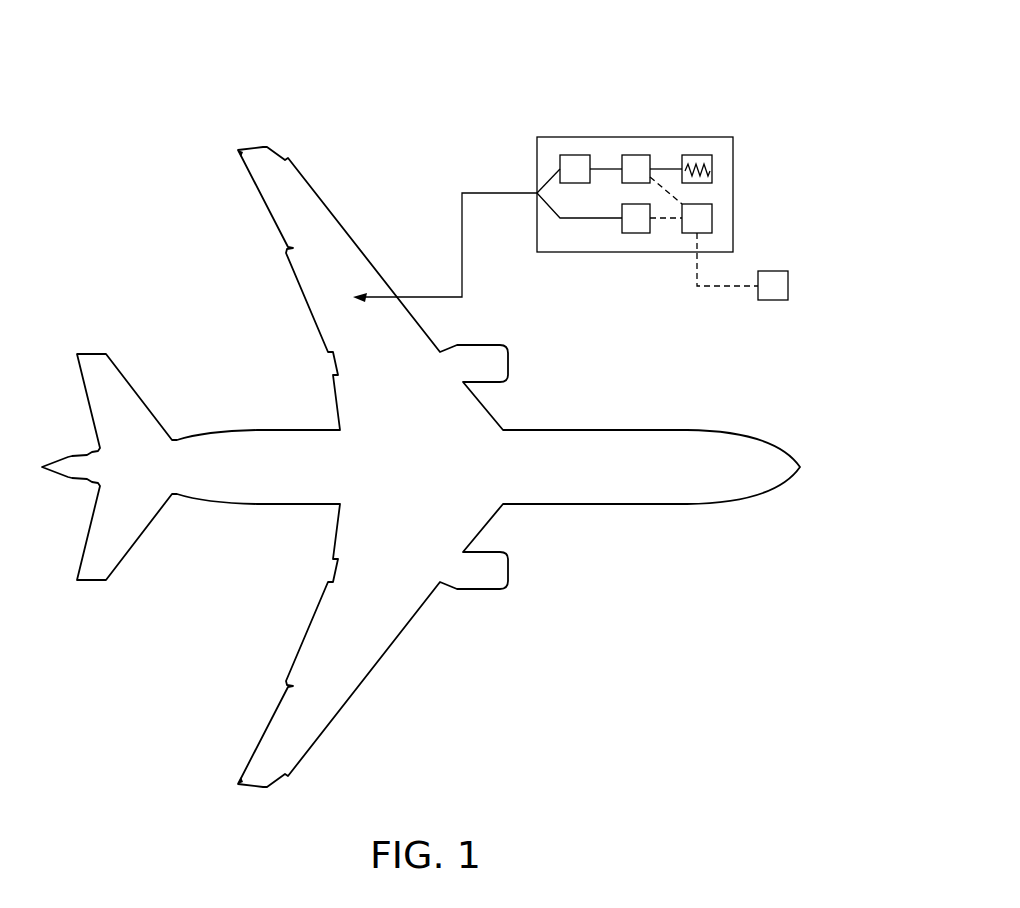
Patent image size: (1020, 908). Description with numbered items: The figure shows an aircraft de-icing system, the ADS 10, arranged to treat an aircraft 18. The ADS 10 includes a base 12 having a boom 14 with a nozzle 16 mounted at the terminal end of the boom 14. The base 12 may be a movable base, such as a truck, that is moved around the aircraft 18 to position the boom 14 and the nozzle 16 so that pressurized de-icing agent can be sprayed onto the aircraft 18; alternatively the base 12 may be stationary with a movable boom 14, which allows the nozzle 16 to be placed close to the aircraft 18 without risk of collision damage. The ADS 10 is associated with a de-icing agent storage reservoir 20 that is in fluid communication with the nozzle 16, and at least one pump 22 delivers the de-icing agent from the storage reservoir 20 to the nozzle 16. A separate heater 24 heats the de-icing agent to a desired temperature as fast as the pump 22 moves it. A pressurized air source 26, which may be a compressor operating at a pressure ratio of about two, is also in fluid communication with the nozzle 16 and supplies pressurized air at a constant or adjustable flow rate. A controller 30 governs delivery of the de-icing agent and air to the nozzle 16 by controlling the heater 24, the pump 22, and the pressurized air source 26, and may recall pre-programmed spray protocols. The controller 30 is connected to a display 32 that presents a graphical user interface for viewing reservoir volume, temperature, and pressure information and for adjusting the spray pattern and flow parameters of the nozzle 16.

The ADS 10 is at (806, 66).
The base 12 is at (733, 196).
The boom 14 is at (462, 227).
The nozzle 16 is at (358, 301).
The aircraft 18 is at (602, 457).
The de-icing agent storage reservoir 20 is at (696, 155).
The pump 22 is at (575, 155).
The heater 24 is at (635, 155).
The pressurized air source 26 is at (635, 233).
The controller 30 is at (712, 218).
The display 32 is at (788, 286).